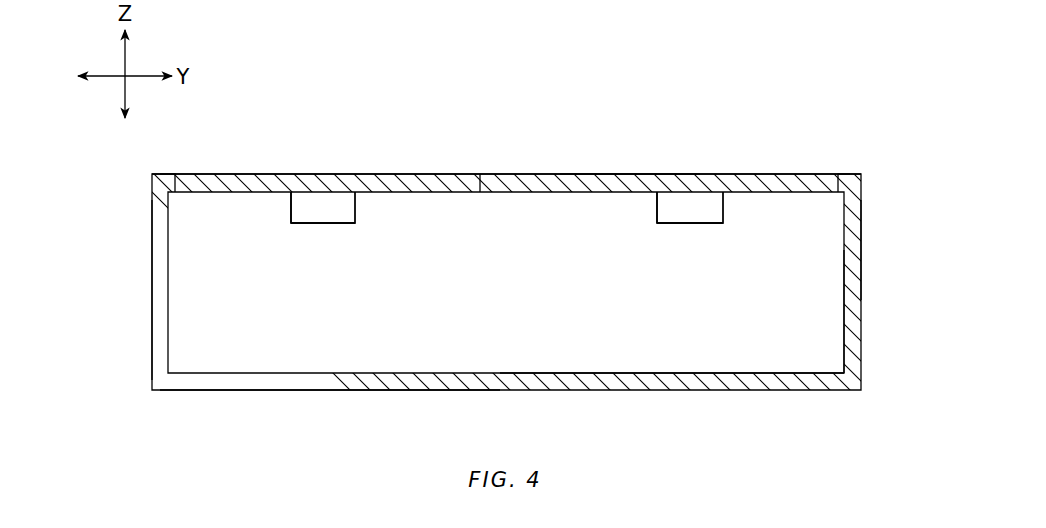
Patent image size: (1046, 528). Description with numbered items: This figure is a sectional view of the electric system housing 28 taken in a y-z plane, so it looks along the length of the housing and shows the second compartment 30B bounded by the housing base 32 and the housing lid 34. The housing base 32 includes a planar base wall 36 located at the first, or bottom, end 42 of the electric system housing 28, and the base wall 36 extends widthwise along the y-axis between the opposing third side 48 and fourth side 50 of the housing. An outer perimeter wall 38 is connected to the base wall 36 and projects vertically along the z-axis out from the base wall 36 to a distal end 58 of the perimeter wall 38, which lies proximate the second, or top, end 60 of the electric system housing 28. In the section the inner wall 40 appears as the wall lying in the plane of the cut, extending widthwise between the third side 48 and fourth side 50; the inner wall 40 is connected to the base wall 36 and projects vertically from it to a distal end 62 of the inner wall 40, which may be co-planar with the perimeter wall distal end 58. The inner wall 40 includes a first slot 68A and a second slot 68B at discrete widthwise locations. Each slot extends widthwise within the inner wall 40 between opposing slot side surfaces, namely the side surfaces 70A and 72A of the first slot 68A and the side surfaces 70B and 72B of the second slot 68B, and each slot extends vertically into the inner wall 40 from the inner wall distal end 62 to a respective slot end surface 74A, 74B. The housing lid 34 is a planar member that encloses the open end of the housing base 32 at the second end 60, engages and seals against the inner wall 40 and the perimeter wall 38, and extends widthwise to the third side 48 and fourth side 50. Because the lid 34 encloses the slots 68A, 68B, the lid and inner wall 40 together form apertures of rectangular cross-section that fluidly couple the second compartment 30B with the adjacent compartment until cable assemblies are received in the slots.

The electric system housing 28 is at (820, 101).
The second compartment 30B is at (475, 317).
The housing base 32 is at (148, 291).
The housing lid 34 is at (410, 172).
The base wall 36 is at (312, 394).
The outer perimeter wall 38 is at (148, 336).
The inner wall 40 is at (810, 341).
The first end 42 is at (647, 391).
The third side 48 is at (152, 264).
The fourth side 50 is at (862, 263).
The distal end of the perimeter wall 58 is at (157, 174).
The second end 60 is at (610, 175).
The distal end of the inner wall 62 is at (508, 187).
The first slot 68A is at (676, 209).
The second slot 68B is at (310, 209).
The slot side surface 70A is at (660, 204).
The slot side surface 70B is at (292, 204).
The slot side surface 72A is at (723, 203).
The slot side surface 72B is at (355, 203).
The slot end surface 74A is at (697, 223).
The slot end surface 74B is at (330, 223).